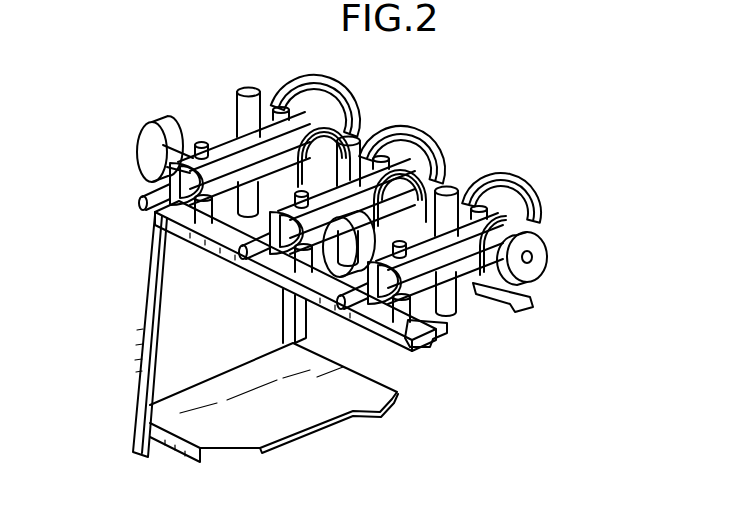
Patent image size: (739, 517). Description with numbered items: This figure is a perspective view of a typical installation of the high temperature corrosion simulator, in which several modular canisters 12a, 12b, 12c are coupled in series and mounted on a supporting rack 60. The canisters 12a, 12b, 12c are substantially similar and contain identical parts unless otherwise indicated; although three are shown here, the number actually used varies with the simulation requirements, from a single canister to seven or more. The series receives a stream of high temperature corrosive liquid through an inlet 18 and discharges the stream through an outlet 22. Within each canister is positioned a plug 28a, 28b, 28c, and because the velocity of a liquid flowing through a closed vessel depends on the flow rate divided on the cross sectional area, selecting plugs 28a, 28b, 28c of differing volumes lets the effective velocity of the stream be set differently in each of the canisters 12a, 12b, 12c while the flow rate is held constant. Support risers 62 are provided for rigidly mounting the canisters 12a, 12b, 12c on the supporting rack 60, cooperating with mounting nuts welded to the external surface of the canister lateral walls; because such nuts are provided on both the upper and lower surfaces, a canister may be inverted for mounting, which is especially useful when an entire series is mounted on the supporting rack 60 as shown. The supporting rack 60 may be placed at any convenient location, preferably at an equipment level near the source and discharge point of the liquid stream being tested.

The canister 12a is at (342, 113).
The canister 12b is at (440, 164).
The canister 12c is at (540, 214).
The plug 28a is at (327, 92).
The plug 28b is at (420, 141).
The plug 28c is at (527, 192).
The inlet 18 is at (135, 141).
The outlet 22 is at (546, 263).
The supporting rack 60 is at (135, 432).
The support risers 62 is at (453, 320).